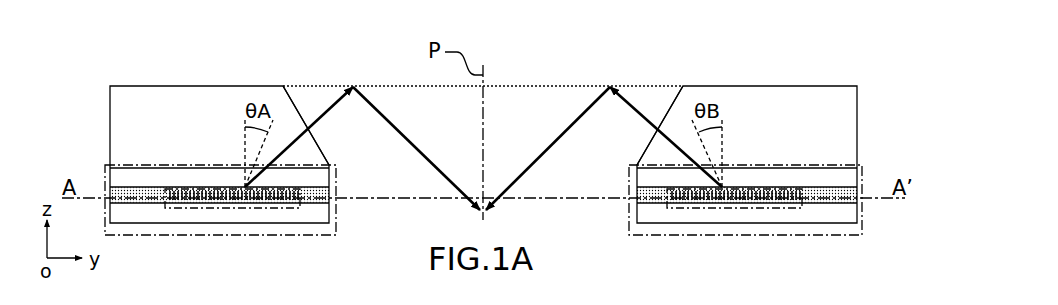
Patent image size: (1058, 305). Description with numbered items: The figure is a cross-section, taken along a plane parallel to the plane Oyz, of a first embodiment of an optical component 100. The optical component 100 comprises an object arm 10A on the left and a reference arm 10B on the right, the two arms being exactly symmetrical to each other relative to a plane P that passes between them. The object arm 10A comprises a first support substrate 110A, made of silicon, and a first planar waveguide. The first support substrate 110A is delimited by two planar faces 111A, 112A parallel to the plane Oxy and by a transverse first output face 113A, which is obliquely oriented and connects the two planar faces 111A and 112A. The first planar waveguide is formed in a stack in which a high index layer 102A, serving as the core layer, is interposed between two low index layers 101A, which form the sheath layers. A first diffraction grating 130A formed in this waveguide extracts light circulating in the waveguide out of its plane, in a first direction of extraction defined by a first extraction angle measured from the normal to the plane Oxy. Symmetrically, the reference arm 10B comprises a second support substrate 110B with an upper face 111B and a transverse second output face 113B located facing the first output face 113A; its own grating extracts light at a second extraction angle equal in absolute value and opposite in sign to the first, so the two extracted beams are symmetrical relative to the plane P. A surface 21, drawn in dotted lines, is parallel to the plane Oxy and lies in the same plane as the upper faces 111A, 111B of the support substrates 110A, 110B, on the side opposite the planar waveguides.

The optical component 100 is at (161, 51).
The object arm 10A is at (220, 142).
The reference arm 10B is at (754, 150).
The first support substrate 110A is at (245, 111).
The second support substrate 110B is at (717, 119).
The planar face 111A is at (267, 86).
The upper face 111B is at (698, 86).
The planar face 112A is at (152, 165).
The first output face 113A is at (297, 107).
The second output face 113B is at (667, 107).
The low index layers 101A is at (322, 212).
The high index layer 102A is at (123, 204).
The first diffraction grating 130A is at (200, 206).
The surface 21 is at (556, 86).